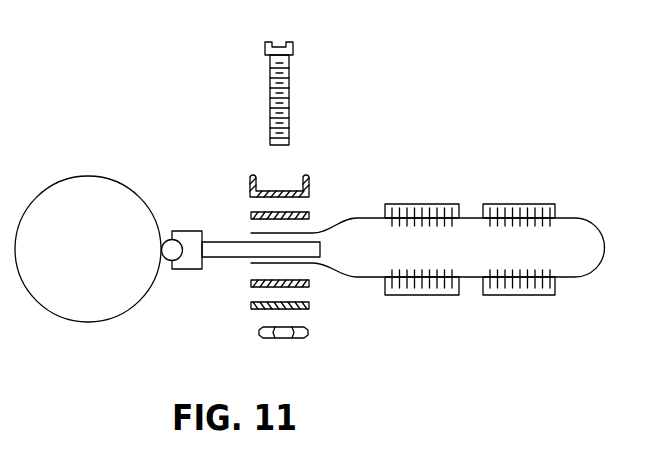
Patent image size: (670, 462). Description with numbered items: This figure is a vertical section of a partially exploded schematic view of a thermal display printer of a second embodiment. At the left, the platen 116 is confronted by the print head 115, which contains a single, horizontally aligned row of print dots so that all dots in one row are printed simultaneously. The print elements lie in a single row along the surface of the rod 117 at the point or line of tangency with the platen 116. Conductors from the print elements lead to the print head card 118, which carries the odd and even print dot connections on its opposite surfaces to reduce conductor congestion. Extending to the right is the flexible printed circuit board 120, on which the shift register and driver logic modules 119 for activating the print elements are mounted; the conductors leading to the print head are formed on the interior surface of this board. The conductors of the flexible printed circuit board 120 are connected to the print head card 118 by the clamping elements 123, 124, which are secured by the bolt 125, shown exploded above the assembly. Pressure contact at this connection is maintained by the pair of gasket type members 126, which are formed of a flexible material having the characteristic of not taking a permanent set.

The print head 115 is at (186, 270).
The platen 116 is at (65, 322).
The rod 117 is at (172, 239).
The print head card 118 is at (222, 241).
The shift register and driver logic modules 119 is at (500, 204).
The flexible printed circuit board 120 is at (574, 279).
The clamping element 123 is at (309, 180).
The clamping element 124 is at (312, 310).
The bolt 125 is at (290, 82).
The gasket type member 126 is at (310, 213).